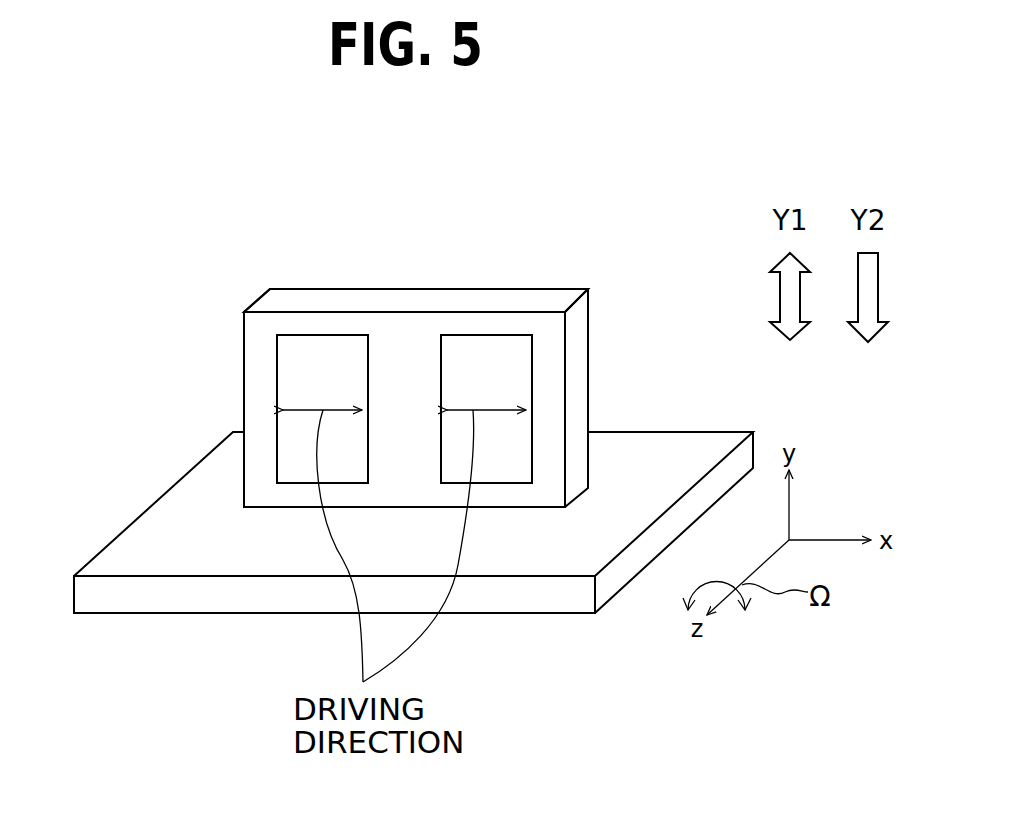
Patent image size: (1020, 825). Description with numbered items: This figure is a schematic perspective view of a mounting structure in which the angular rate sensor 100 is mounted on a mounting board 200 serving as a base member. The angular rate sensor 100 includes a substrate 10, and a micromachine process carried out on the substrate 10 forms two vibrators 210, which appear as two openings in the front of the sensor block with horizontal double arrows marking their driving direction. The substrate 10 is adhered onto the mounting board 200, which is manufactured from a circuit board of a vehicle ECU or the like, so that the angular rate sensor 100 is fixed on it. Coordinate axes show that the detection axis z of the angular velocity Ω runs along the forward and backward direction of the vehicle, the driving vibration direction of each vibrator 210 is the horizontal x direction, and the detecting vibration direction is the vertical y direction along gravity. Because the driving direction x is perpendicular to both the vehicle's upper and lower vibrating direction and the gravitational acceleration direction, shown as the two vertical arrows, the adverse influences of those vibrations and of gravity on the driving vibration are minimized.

The substrate 10 is at (427, 302).
The angular rate sensor 100 is at (280, 300).
The mounting board 200 is at (160, 523).
The vibrators 210 is at (332, 358).